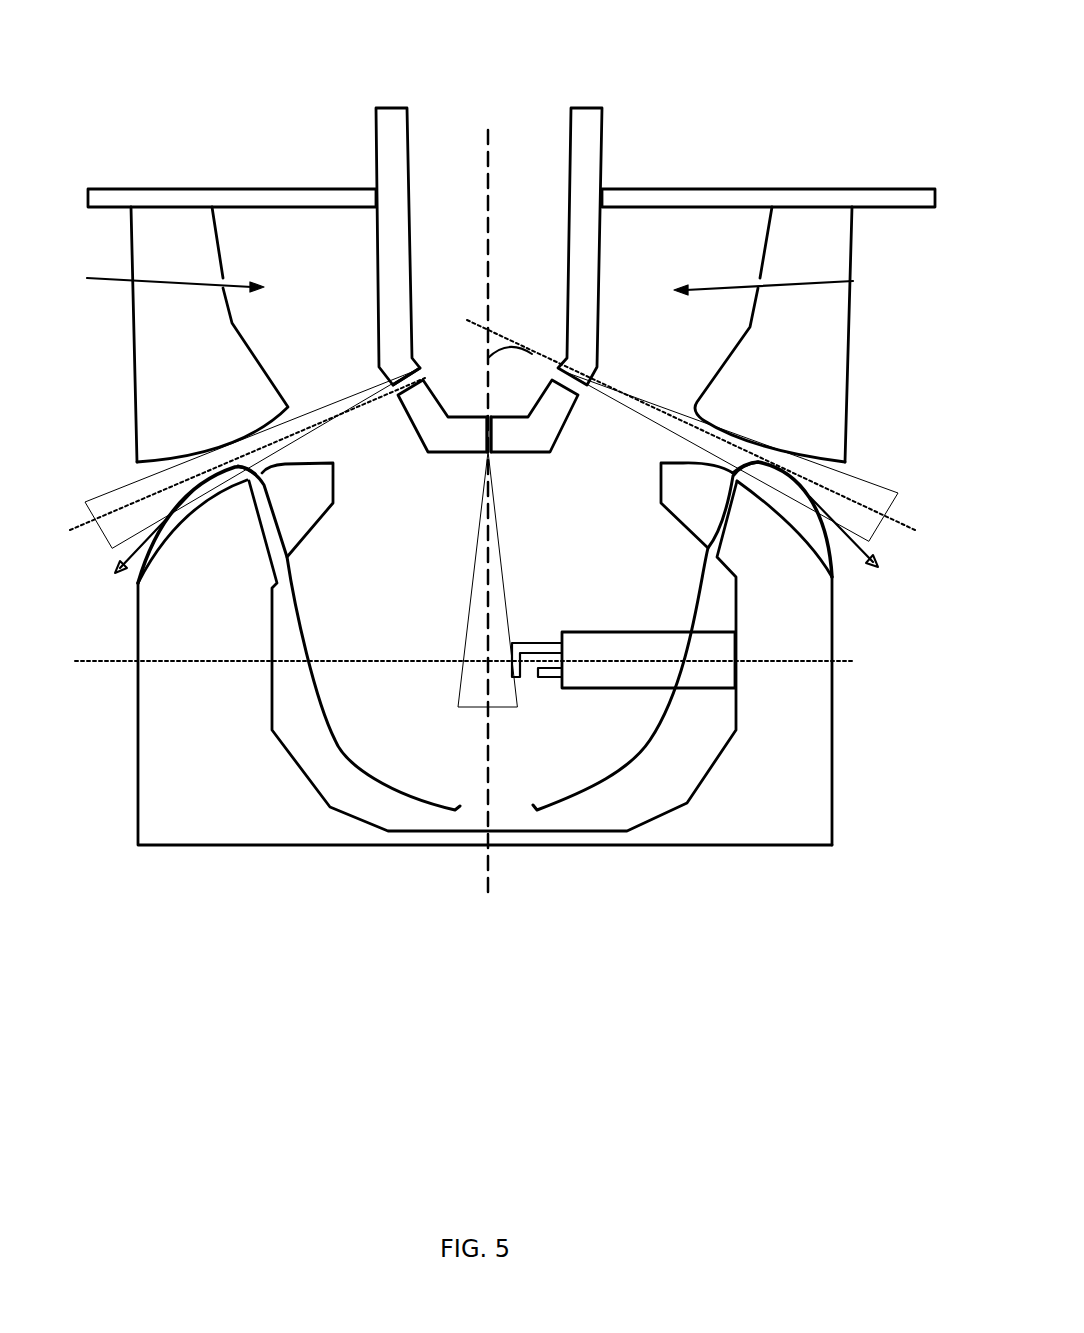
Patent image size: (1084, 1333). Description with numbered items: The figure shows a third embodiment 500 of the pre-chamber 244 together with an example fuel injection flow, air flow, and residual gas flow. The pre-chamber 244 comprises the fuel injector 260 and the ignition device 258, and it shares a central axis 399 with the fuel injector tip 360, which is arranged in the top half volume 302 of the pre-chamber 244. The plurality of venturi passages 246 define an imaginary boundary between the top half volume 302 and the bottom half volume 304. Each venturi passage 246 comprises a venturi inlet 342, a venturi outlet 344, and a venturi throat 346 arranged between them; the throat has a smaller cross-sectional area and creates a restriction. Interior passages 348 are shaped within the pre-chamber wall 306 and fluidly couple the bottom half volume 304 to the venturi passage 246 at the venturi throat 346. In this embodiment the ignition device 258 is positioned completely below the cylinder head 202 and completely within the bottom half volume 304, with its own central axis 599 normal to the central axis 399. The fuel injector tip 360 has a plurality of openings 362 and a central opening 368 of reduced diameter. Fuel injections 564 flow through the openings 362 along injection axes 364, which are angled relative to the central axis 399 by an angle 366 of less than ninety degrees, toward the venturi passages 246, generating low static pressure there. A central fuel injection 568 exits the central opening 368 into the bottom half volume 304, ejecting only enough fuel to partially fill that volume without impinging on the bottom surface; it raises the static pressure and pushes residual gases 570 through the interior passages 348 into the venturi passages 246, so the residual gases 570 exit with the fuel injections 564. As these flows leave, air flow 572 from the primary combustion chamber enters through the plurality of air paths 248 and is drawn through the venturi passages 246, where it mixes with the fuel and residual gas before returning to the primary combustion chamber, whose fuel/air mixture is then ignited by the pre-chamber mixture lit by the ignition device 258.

The cylinder head 202 is at (163, 189).
The pre-chamber 244 is at (832, 845).
The venturi passages 246 is at (835, 577).
The air paths 248 is at (853, 281).
The ignition device 258 is at (635, 632).
The fuel injector 260 is at (402, 107).
The top half volume 302 is at (318, 340).
The bottom half volume 304 is at (385, 588).
The pre-chamber wall 306 is at (833, 637).
The venturi inlet 342 is at (697, 402).
The venturi outlet 344 is at (845, 462).
The venturi throat 346 is at (767, 443).
The interior passages 348 is at (707, 548).
The fuel injector tip 360 is at (418, 432).
The plurality of openings 362 is at (420, 372).
The injection axes 364 is at (138, 501).
The angle 366 is at (532, 354).
The central opening 368 is at (493, 455).
The central axis 399 is at (490, 868).
The third embodiment 500 is at (866, 27).
The fuel injections 564 is at (898, 493).
The central fuel injection 568 is at (458, 707).
The residual gases 570 is at (587, 780).
The air flow 572 is at (108, 278).
The central axis of the ignition device 599 is at (113, 661).